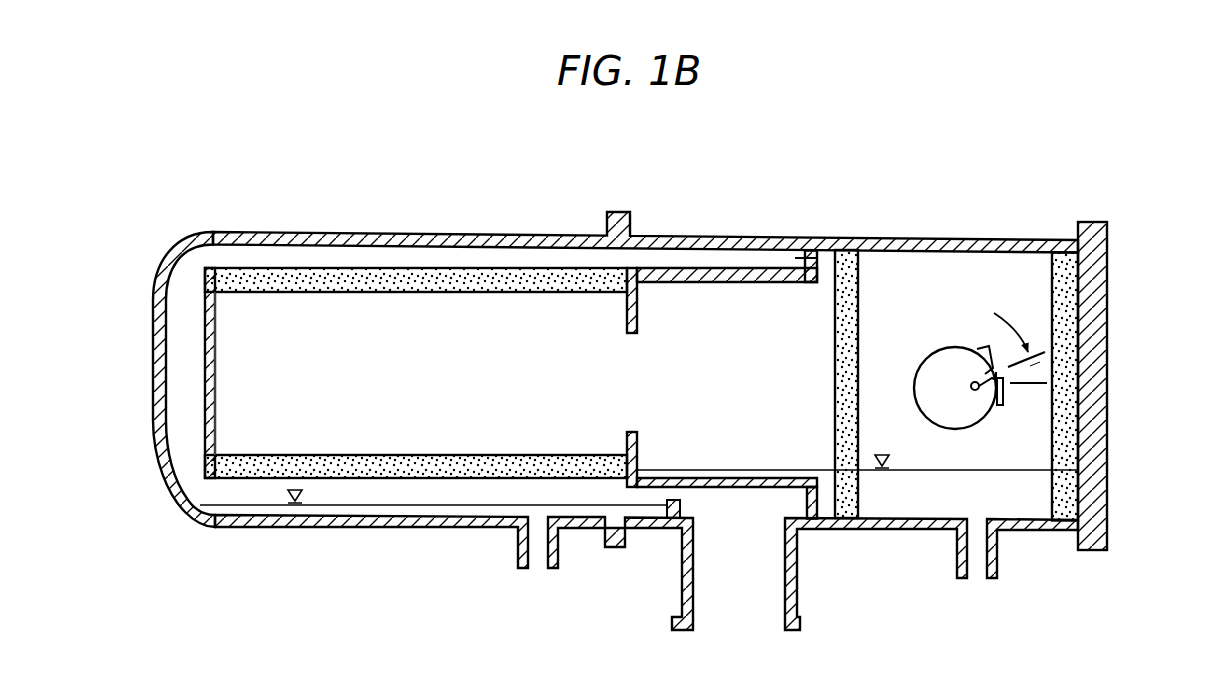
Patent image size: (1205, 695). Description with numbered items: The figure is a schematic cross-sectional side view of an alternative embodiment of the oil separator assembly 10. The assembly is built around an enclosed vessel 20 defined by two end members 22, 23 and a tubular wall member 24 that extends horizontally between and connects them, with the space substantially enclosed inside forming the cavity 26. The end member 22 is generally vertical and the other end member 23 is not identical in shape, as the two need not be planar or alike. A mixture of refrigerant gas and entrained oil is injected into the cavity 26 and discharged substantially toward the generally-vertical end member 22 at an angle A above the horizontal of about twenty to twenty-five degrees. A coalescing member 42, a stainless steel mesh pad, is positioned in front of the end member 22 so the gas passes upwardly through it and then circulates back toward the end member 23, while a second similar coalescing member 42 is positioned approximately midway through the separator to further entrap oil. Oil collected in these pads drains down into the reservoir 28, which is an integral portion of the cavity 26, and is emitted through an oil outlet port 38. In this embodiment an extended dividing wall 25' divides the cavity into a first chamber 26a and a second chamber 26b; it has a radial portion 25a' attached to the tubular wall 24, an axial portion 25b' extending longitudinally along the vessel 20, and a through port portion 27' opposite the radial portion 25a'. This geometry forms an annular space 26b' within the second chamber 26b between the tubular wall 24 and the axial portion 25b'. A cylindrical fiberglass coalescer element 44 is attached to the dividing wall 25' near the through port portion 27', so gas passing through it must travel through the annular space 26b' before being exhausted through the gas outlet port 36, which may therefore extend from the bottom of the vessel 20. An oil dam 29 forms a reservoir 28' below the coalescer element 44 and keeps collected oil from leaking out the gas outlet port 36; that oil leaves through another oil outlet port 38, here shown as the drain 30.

The oil separator assembly 10 is at (203, 103).
The vessel 20 is at (548, 212).
The end member 22 is at (1100, 300).
The end member 23 is at (155, 388).
The tubular wall member 24 is at (420, 232).
The extended dividing wall 25' is at (591, 377).
The radial portion 25a' is at (781, 214).
The axial portion 25b' is at (727, 303).
The cavity 26 is at (985, 297).
The first chamber 26a is at (750, 446).
The second chamber 26b is at (267, 373).
The annular space 26b' is at (727, 227).
The through port portion 27' is at (580, 386).
The reservoir 28 is at (936, 548).
The reservoir 28' is at (433, 540).
The oil dam 29 is at (672, 528).
The drain outlet 30 is at (1000, 555).
The gas outlet port 36 is at (678, 615).
The oil outlet port 38 is at (520, 558).
The coalescing member 42 is at (858, 340).
The coalescer element 44 is at (297, 290).
The angle A is at (1037, 368).